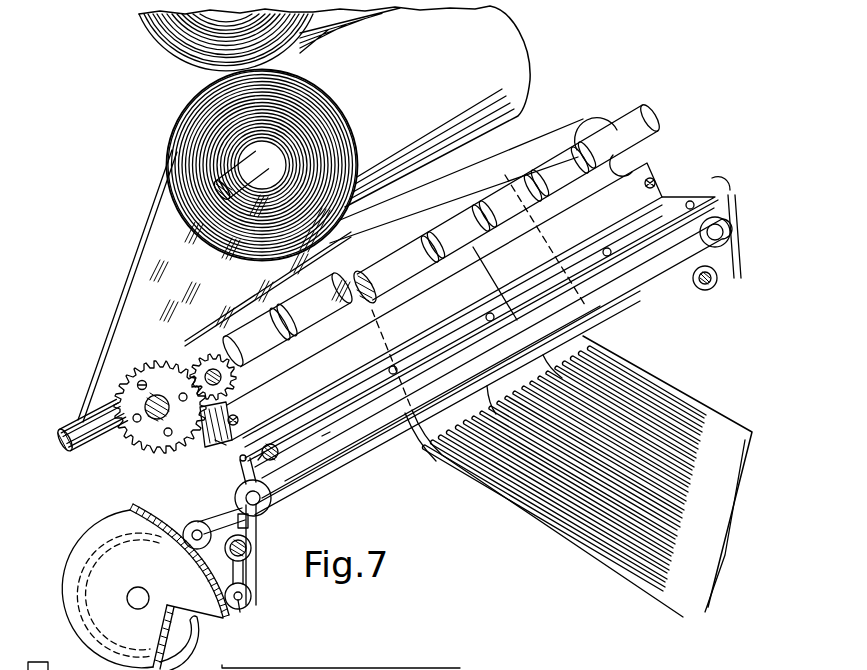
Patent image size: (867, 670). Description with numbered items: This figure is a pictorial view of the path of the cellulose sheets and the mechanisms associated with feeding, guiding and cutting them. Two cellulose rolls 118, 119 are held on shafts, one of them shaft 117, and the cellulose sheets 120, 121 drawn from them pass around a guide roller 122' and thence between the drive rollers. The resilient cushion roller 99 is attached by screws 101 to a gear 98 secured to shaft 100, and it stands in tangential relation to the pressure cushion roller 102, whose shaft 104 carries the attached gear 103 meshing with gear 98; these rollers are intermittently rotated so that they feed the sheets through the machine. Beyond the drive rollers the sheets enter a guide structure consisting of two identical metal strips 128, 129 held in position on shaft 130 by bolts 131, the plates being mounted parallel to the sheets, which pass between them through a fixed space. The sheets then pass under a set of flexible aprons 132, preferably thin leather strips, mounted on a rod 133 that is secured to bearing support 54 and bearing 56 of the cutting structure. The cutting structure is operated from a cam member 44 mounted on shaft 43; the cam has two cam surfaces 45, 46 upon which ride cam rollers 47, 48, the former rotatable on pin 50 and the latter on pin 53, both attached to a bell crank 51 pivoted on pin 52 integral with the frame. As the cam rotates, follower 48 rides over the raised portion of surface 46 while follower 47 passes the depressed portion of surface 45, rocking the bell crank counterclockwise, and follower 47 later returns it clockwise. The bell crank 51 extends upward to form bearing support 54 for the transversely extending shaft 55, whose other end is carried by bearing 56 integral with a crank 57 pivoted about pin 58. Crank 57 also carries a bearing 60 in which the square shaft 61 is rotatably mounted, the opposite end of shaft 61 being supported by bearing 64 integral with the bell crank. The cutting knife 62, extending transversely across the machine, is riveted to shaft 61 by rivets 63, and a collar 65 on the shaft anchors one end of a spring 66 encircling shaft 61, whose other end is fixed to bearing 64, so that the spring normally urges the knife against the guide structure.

The cellulose roll 118 is at (165, 42).
The cellulose roll 119 is at (192, 98).
The shaft 117 is at (222, 186).
The cellulose sheet 120 is at (153, 195).
The cellulose sheet 121 is at (131, 264).
The resilient cushion roller 99 is at (558, 145).
The pressure cushion roller 102 is at (641, 126).
The shaft of the pressure roller 104 is at (350, 278).
The gear 103 is at (215, 358).
The screws 101 is at (141, 383).
The guide roller 122' is at (70, 426).
The shaft 100 is at (140, 442).
The gear 98 is at (150, 456).
The bolts 131 is at (663, 178).
The metal strip 129 is at (222, 447).
The cutting knife 62 is at (669, 222).
The rivets 63 is at (622, 258).
The rod 133 is at (667, 266).
The transversely extending shaft 55 is at (337, 462).
The aprons 132 is at (622, 300).
The square shaft 61 is at (318, 438).
The bearing 60 is at (719, 192).
The bearing 56 is at (723, 272).
The crank 57 is at (735, 285).
The pin 58 is at (706, 290).
The metal strip 128 is at (258, 440).
The shaft 130 is at (215, 438).
The bearing 64 is at (243, 470).
The collar 65 is at (278, 452).
The spring 66 is at (262, 456).
The bearing support 54 is at (262, 508).
The cam roller 47 is at (205, 497).
The pin 50 is at (195, 530).
The bell crank 51 is at (253, 548).
The pin 52 is at (250, 568).
The cam roller 48 is at (252, 596).
The pin 53 is at (240, 600).
The cam member 44 is at (80, 580).
The cam surface 45 is at (155, 505).
The shaft 43 is at (130, 600).
The cam surface 46 is at (195, 633).